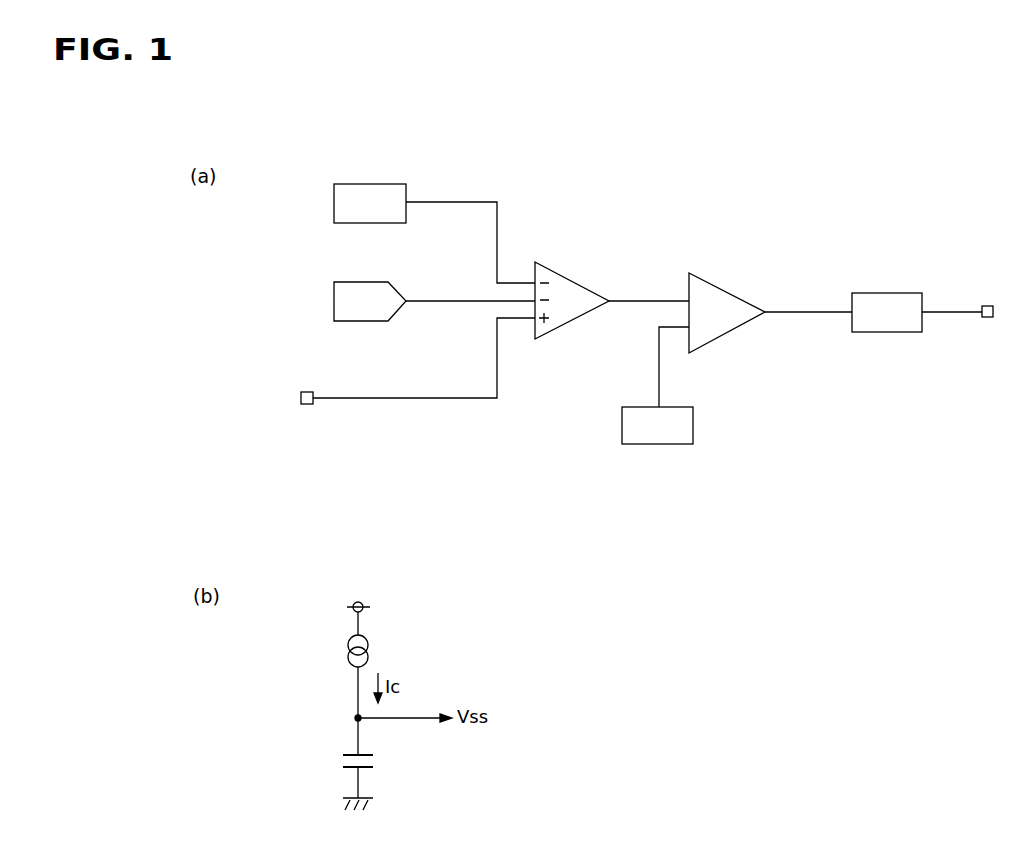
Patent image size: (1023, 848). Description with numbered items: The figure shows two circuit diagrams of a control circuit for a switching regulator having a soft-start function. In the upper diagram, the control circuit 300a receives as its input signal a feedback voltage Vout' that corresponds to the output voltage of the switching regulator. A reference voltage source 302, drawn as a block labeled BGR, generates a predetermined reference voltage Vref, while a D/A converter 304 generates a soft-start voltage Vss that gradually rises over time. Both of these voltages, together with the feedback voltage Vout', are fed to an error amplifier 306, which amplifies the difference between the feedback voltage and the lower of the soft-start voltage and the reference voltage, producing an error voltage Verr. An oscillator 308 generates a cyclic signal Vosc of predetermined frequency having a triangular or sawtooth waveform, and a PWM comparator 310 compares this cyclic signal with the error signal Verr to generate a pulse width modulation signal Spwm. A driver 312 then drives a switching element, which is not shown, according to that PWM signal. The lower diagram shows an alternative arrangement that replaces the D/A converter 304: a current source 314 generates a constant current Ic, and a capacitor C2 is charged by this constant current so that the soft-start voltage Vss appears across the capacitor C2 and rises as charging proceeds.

In FIG. 1A, the control circuit 300a is at (654, 498).
In FIG. 1A, the reference voltage source 302 is at (375, 184).
In FIG. 1A, the D/A converter 304 is at (375, 282).
In FIG. 1A, the error amplifier 306 is at (562, 274).
In FIG. 1A, the oscillator 308 is at (693, 426).
In FIG. 1A, the PWM comparator 310 is at (728, 293).
In FIG. 1A, the driver 312 is at (890, 293).
In FIG. 1B, the current source 314 is at (348, 650).
In FIG. 1B, the capacitor C2 is at (343, 762).